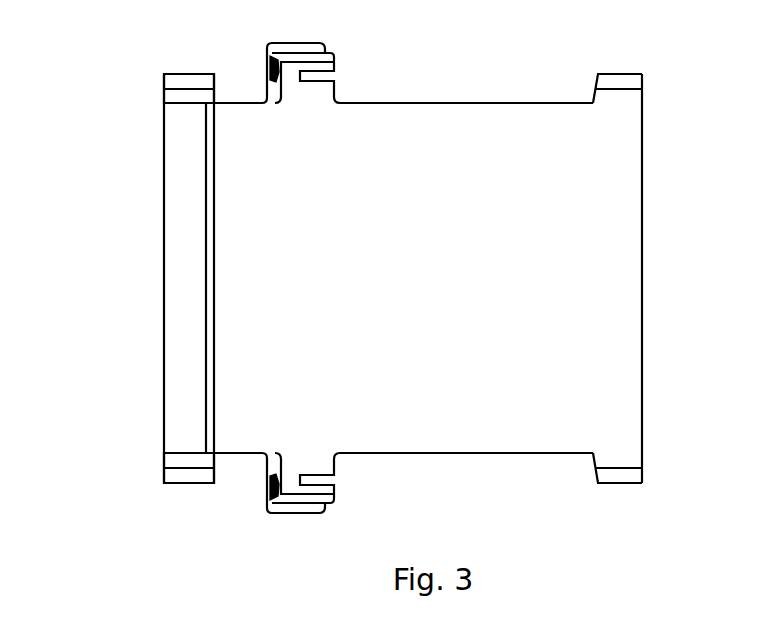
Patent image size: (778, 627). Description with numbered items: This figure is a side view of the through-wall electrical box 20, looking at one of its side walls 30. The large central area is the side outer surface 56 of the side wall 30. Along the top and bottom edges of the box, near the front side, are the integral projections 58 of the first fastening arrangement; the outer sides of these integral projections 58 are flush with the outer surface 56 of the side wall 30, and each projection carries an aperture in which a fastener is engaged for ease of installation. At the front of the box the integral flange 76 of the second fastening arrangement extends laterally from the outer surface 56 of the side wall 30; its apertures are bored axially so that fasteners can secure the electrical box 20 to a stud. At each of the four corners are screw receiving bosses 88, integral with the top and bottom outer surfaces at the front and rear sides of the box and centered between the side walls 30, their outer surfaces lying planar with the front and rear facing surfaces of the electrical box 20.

The through-wall electrical box 20 is at (112, 166).
The side wall 30 is at (597, 252).
The side outer surface 56 is at (388, 273).
The integral projections 58 is at (294, 75).
The integral flange 76 is at (207, 287).
The screw receiving bosses 88 is at (187, 87).